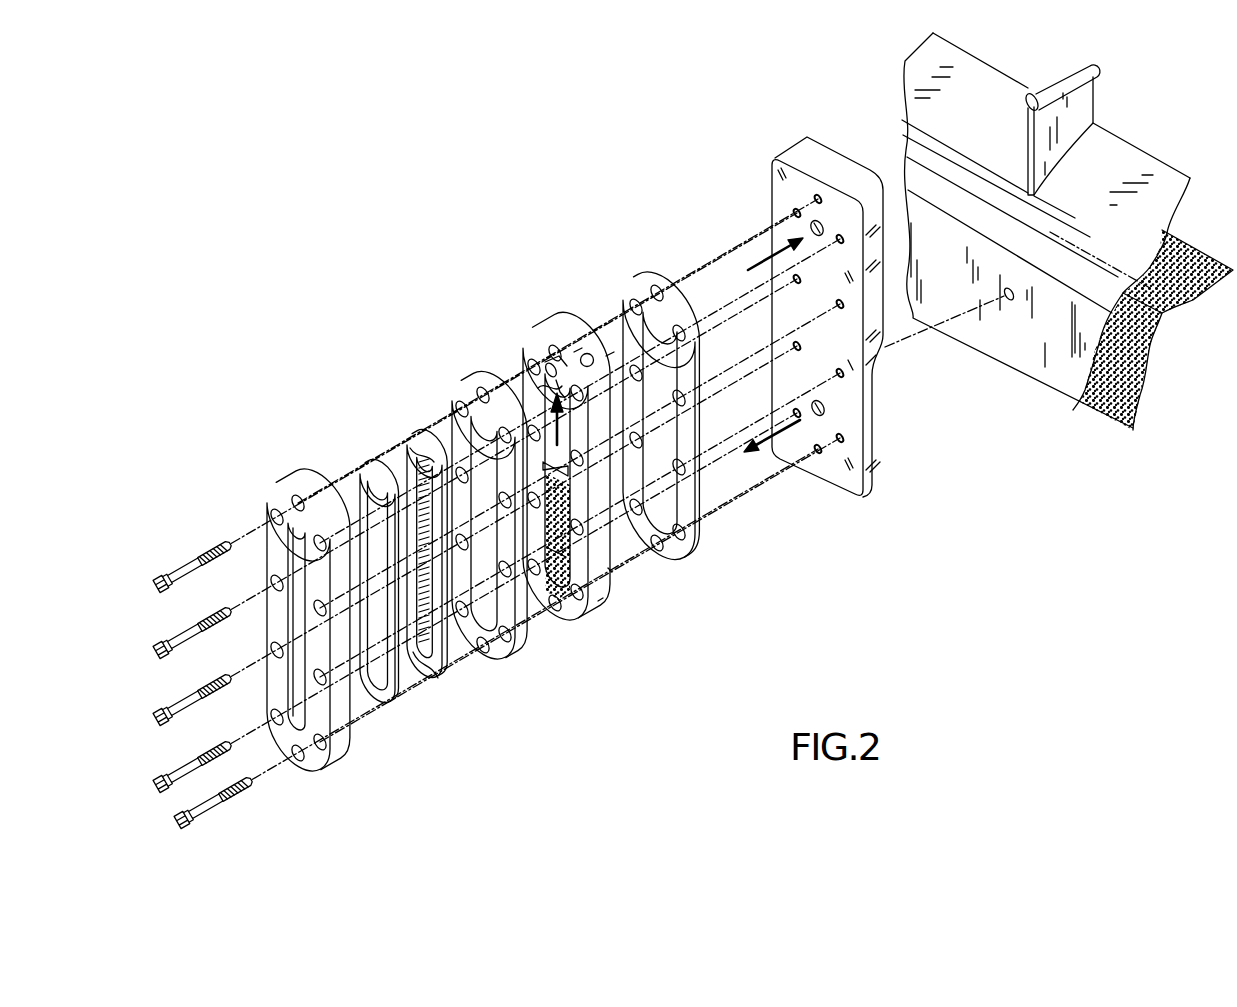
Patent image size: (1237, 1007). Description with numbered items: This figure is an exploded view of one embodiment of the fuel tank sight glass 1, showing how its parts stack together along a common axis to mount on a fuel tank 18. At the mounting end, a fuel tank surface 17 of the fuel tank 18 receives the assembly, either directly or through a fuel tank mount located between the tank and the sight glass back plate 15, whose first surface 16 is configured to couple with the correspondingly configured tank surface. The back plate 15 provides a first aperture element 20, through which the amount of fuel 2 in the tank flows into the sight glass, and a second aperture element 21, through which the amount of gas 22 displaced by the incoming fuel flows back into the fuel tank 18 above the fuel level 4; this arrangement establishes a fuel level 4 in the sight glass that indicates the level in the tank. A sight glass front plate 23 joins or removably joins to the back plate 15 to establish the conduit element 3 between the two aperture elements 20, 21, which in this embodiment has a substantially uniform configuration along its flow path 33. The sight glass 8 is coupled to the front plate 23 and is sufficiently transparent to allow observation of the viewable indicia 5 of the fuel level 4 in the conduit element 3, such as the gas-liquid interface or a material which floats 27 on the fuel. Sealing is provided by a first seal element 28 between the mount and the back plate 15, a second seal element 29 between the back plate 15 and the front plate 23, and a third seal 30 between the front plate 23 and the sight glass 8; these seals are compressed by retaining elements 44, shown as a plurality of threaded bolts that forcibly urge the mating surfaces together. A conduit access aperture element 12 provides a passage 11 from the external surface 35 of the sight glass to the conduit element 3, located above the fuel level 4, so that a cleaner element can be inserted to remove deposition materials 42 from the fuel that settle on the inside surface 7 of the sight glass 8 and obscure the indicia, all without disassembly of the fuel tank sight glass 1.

The fuel tank sight glass 1 is at (526, 250).
The amount of fuel 2 is at (787, 450).
The conduit element 3 is at (537, 347).
The fuel level 4 is at (1163, 297).
The viewable indicia 5 is at (413, 463).
The inside surface 7 is at (452, 672).
The sight glass 8 is at (440, 680).
The passage 11 is at (592, 353).
The conduit access aperture element 12 is at (578, 350).
The sight glass back plate 15 is at (603, 598).
The first surface 16 is at (612, 572).
The fuel tank surface 17 is at (1082, 223).
The fuel tank 18 is at (1108, 140).
The first aperture element 20 is at (828, 408).
The second aperture element 21 is at (540, 373).
The amount of gas 22 is at (560, 422).
The sight glass front plate 23 is at (305, 478).
The material which floats 27 is at (567, 470).
The first seal element 28 is at (645, 276).
The second seal element 29 is at (508, 662).
The third seal 30 is at (388, 702).
The flow path 33 is at (540, 392).
The external surface 35 is at (612, 352).
The deposition materials 42 is at (1108, 395).
The retaining elements 44 is at (218, 604).